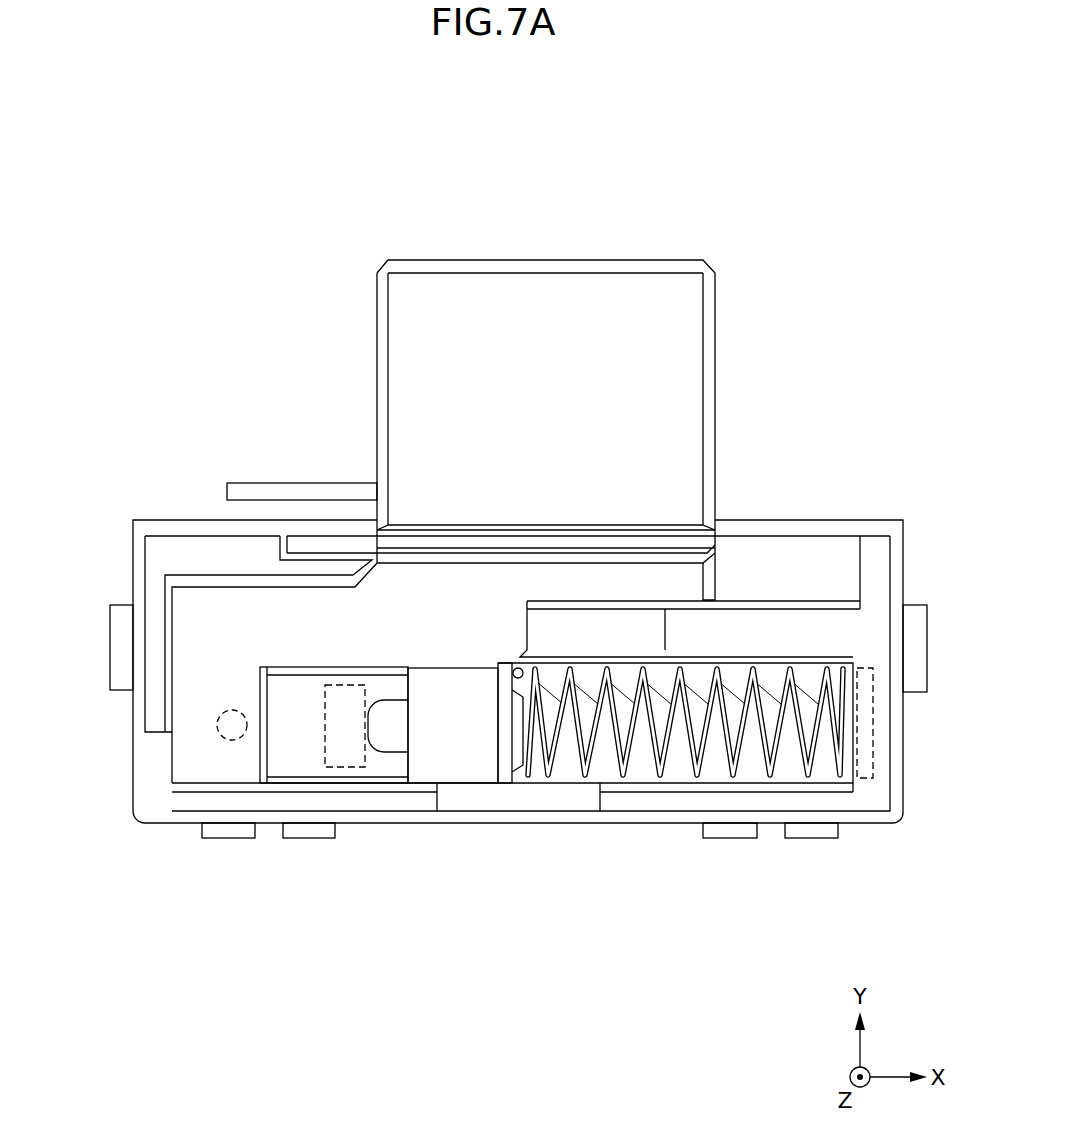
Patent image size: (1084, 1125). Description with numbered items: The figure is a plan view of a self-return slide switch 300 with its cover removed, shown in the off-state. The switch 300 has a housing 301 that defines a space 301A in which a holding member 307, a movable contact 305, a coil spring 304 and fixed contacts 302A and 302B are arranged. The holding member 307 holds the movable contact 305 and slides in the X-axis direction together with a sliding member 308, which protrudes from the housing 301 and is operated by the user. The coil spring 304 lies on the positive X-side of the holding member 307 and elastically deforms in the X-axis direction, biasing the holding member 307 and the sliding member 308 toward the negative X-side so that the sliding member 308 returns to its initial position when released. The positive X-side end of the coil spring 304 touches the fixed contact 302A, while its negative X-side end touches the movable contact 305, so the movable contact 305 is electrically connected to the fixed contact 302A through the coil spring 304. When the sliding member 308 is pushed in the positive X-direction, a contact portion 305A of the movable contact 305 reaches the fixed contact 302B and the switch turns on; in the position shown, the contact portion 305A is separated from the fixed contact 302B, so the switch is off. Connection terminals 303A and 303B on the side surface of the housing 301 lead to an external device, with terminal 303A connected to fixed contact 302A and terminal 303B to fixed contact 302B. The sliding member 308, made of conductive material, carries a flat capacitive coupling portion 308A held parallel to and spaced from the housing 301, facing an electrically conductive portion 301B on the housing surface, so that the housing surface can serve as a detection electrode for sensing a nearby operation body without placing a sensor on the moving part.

The slide switch 300 is at (895, 143).
The housing 301 is at (140, 562).
The space 301A is at (201, 762).
The electrically conductive portion 301B is at (175, 527).
The fixed contact 302A is at (863, 779).
The fixed contact 302B is at (352, 768).
The connection terminal 303A is at (728, 838).
The connection terminal 303B is at (305, 838).
The coil spring 304 is at (638, 786).
The movable contact 305 is at (507, 733).
The contact portion 305A is at (231, 742).
The holding member 307 is at (473, 762).
The sliding member 308 is at (655, 250).
The capacitive coupling portion 308A is at (303, 490).